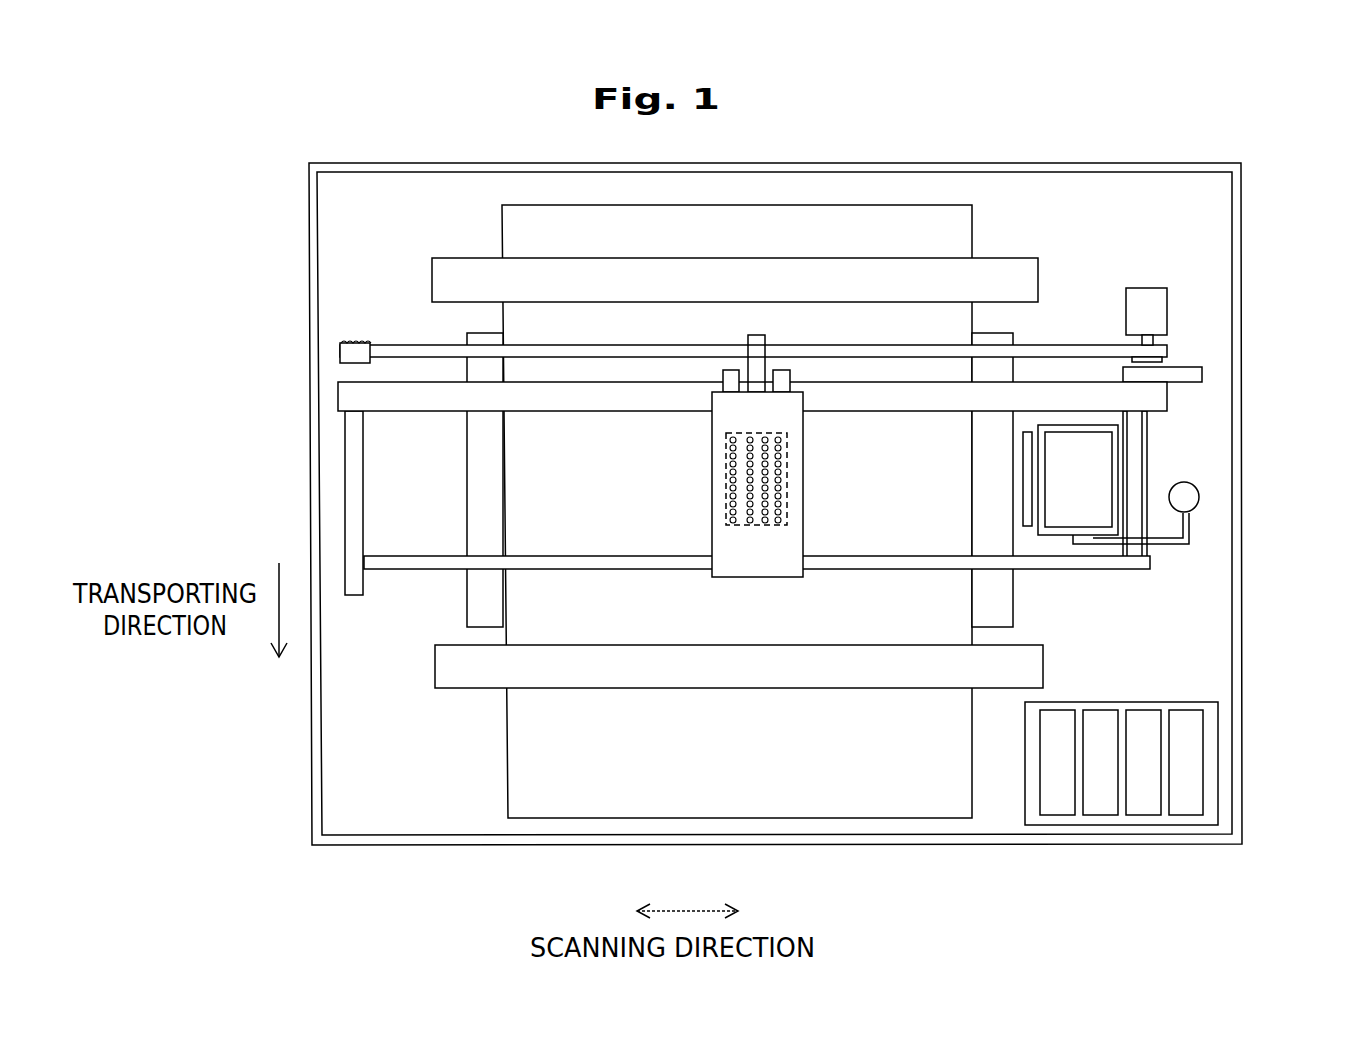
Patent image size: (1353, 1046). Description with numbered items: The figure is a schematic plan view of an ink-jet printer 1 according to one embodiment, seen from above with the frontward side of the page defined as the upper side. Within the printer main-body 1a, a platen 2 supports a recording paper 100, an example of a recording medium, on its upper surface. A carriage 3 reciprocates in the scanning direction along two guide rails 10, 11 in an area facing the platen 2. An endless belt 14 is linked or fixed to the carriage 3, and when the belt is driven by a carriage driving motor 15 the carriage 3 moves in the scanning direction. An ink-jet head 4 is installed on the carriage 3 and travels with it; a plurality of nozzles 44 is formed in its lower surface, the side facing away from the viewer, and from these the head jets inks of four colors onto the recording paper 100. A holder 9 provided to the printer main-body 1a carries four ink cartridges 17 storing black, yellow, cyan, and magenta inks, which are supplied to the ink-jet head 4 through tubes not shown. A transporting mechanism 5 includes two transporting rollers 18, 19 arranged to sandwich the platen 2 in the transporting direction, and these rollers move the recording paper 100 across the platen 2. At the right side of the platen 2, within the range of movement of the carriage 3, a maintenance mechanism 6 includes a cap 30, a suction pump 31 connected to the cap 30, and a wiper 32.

The printer 1 is at (1259, 210).
The printer main-body 1a is at (1242, 595).
The recording paper 100 is at (520, 713).
The transporting roller 18 is at (995, 287).
The transporting roller 19 is at (997, 655).
The platen 2 is at (475, 580).
The transporting mechanism 5 is at (1052, 248).
The endless belt 14 is at (1055, 353).
The guide rail 10 is at (1086, 398).
The guide rail 11 is at (1137, 568).
The carriage 3 is at (752, 560).
The ink-jet head 4 is at (788, 507).
The nozzles 44 is at (783, 455).
The carriage driving motor 15 is at (1155, 305).
The wiper 32 is at (1028, 527).
The cap 30 is at (1093, 537).
The suction pump 31 is at (1197, 500).
The maintenance mechanism 6 is at (1205, 465).
The holder 9 is at (1212, 730).
The ink cartridges 17 is at (1183, 800).